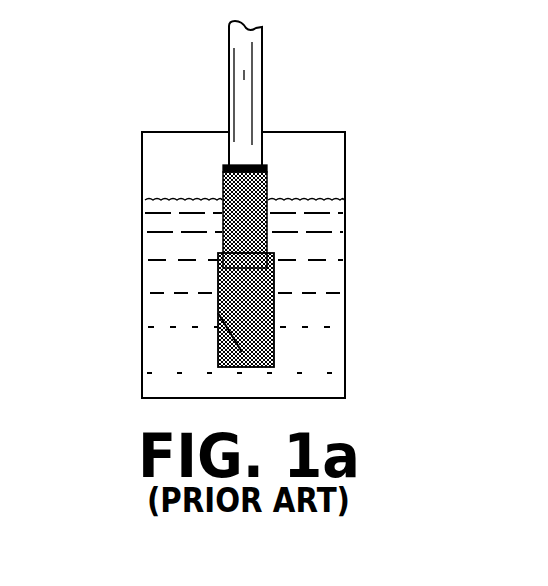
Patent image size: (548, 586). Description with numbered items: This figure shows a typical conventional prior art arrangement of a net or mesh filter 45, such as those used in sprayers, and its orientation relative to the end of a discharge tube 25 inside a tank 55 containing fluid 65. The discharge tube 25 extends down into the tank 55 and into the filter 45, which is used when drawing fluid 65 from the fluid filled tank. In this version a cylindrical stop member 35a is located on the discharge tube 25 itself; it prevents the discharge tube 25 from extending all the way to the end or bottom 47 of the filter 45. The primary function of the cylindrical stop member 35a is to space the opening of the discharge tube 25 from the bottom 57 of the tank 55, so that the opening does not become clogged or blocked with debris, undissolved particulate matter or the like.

The discharge tube 25 is at (263, 60).
The cylindrical stop member 35a is at (264, 166).
The fluid 65 is at (323, 230).
The net or mesh filter 45 is at (275, 307).
The bottom of filter 47 is at (218, 313).
The tank 55 is at (345, 352).
The bottom of tank 57 is at (213, 400).